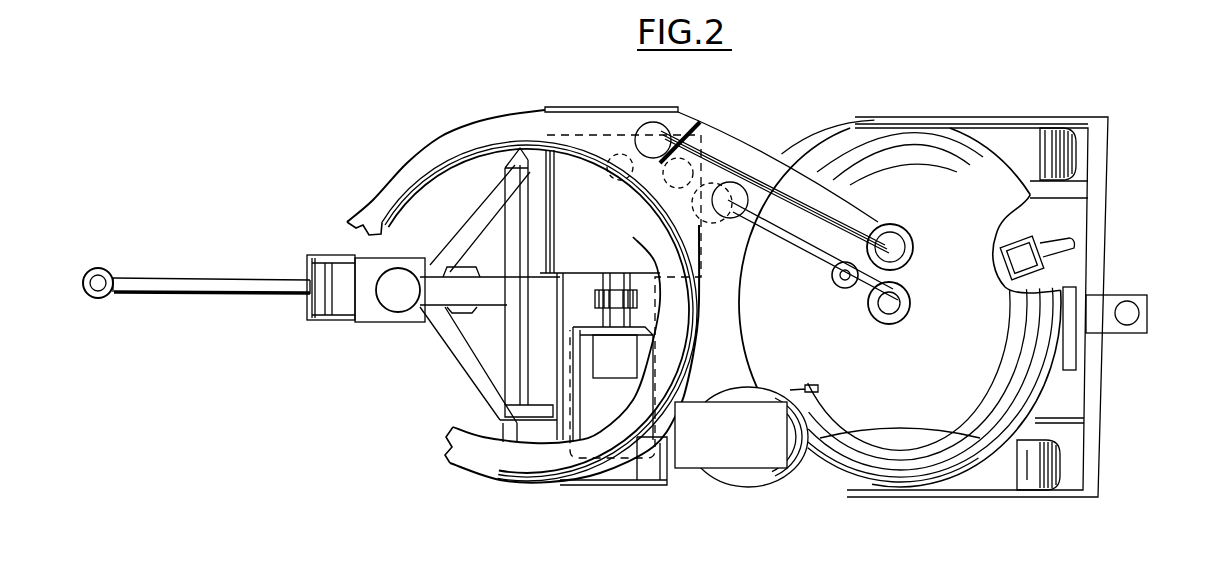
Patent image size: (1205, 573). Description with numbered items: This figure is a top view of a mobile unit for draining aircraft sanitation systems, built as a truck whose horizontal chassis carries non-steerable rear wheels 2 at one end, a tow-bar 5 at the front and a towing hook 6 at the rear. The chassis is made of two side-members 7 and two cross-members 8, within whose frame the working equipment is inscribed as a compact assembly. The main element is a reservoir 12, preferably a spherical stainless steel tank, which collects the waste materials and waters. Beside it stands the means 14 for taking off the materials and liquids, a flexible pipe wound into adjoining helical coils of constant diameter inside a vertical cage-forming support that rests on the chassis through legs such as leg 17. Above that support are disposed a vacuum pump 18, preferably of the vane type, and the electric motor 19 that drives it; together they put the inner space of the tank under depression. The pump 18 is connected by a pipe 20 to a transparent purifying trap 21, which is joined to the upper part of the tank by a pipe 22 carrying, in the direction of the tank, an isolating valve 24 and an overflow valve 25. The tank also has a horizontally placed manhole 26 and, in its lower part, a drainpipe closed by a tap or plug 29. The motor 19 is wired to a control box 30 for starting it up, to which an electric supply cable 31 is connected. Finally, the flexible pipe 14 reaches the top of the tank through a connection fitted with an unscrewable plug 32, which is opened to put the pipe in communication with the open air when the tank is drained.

The rear wheels 2 is at (1003, 147).
The tow-bar 5 is at (244, 300).
The towing hook 6 is at (1147, 320).
The side-members 7 is at (1077, 198).
The cross-members 8 is at (510, 371).
The reservoir 12 is at (873, 140).
The means for taking off the materials and liquids 14 is at (503, 120).
The leg 17 is at (472, 248).
The vacuum pump 18 is at (575, 238).
The electric motor 19 is at (598, 398).
The pipe 20 is at (650, 180).
The purifying trap 21 is at (745, 175).
The pipe 22 is at (810, 250).
The isolating valve 24 is at (840, 297).
The overflow valve 25 is at (913, 295).
The manhole 26 is at (1073, 345).
The tap or plug 29 is at (1070, 273).
The control box 30 is at (772, 416).
The electric supply cable 31 is at (745, 477).
The unscrewable plug 32 is at (917, 257).